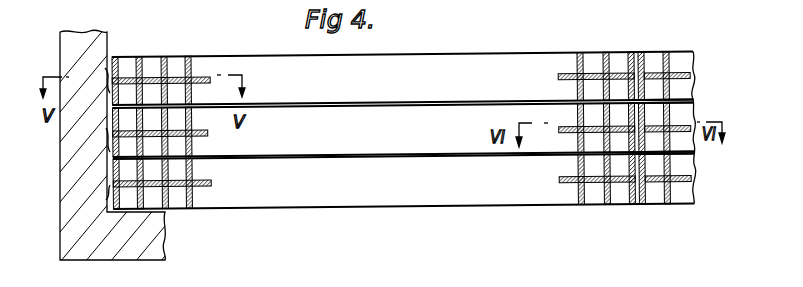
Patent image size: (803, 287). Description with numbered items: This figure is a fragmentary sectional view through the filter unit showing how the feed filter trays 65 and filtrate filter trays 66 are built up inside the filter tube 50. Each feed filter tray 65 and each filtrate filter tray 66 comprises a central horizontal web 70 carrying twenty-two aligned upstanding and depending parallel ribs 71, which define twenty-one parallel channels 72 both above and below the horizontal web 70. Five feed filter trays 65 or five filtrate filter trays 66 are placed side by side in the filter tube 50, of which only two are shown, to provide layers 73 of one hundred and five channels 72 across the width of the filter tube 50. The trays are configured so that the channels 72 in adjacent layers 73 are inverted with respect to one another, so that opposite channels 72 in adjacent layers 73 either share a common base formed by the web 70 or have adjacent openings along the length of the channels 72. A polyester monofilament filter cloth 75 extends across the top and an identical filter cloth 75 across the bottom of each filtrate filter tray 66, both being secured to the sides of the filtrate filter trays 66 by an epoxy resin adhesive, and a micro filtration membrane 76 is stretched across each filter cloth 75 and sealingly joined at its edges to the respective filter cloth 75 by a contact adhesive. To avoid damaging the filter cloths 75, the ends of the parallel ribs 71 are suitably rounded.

The filter tube 50 is at (113, 247).
The feed filter tray 65 is at (518, 63).
The filtrate filter tray 66 is at (553, 143).
The central horizontal web 70 is at (677, 68).
The parallel ribs 71 is at (652, 82).
The channels 72 is at (592, 92).
The layers 73 is at (110, 66).
The filter cloth 75 is at (690, 100).
The micro filtration membrane 76 is at (690, 80).